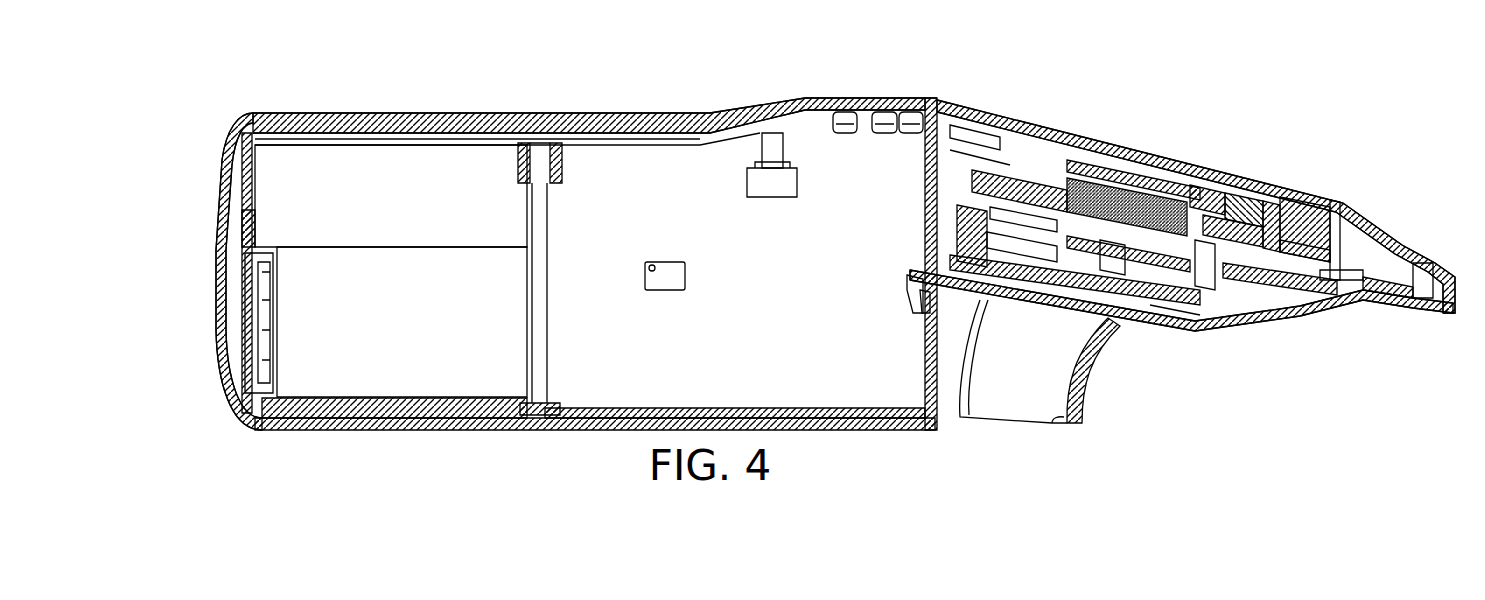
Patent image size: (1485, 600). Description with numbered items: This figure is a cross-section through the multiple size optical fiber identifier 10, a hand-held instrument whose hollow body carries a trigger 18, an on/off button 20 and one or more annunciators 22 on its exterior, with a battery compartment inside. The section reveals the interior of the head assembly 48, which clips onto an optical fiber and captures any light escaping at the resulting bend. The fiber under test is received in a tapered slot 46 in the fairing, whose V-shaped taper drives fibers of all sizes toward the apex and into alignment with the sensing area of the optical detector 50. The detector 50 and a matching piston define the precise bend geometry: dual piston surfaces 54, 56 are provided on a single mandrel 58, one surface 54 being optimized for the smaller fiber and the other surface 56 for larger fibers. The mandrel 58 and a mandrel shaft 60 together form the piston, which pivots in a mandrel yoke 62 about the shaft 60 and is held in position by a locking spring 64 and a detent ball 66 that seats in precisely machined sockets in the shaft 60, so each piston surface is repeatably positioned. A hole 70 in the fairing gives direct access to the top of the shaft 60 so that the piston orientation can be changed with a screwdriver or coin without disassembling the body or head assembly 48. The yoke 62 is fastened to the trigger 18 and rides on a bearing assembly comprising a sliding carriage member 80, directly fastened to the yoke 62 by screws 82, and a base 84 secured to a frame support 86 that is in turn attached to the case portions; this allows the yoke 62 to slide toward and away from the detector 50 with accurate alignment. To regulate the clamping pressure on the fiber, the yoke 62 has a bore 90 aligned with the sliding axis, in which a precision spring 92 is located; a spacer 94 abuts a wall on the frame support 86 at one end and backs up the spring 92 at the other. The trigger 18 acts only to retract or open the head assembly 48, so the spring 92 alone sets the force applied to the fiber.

The fiber identifier 10 is at (668, 84).
The trigger 18 is at (1052, 427).
The on/off button 20 is at (742, 112).
The annunciators 22 is at (885, 97).
The slot 46 is at (1272, 200).
The head assembly 48 is at (1029, 156).
The optical detector 50 is at (1323, 198).
The piston surface 54 is at (1303, 255).
The piston surface 56 is at (1192, 185).
The mandrel 58 is at (1265, 197).
The mandrel shaft 60 is at (1263, 295).
The mandrel yoke 62 is at (1107, 178).
The locking spring 64 is at (1210, 187).
The detent ball 66 is at (1223, 193).
The hole 70 is at (1155, 165).
The sliding carriage member 80 is at (1160, 305).
The screws 82 is at (1203, 300).
The base 84 is at (1127, 300).
The frame support 86 is at (1187, 318).
The bore 90 is at (1163, 190).
The precision spring 92 is at (1055, 170).
The spacer 94 is at (1012, 158).